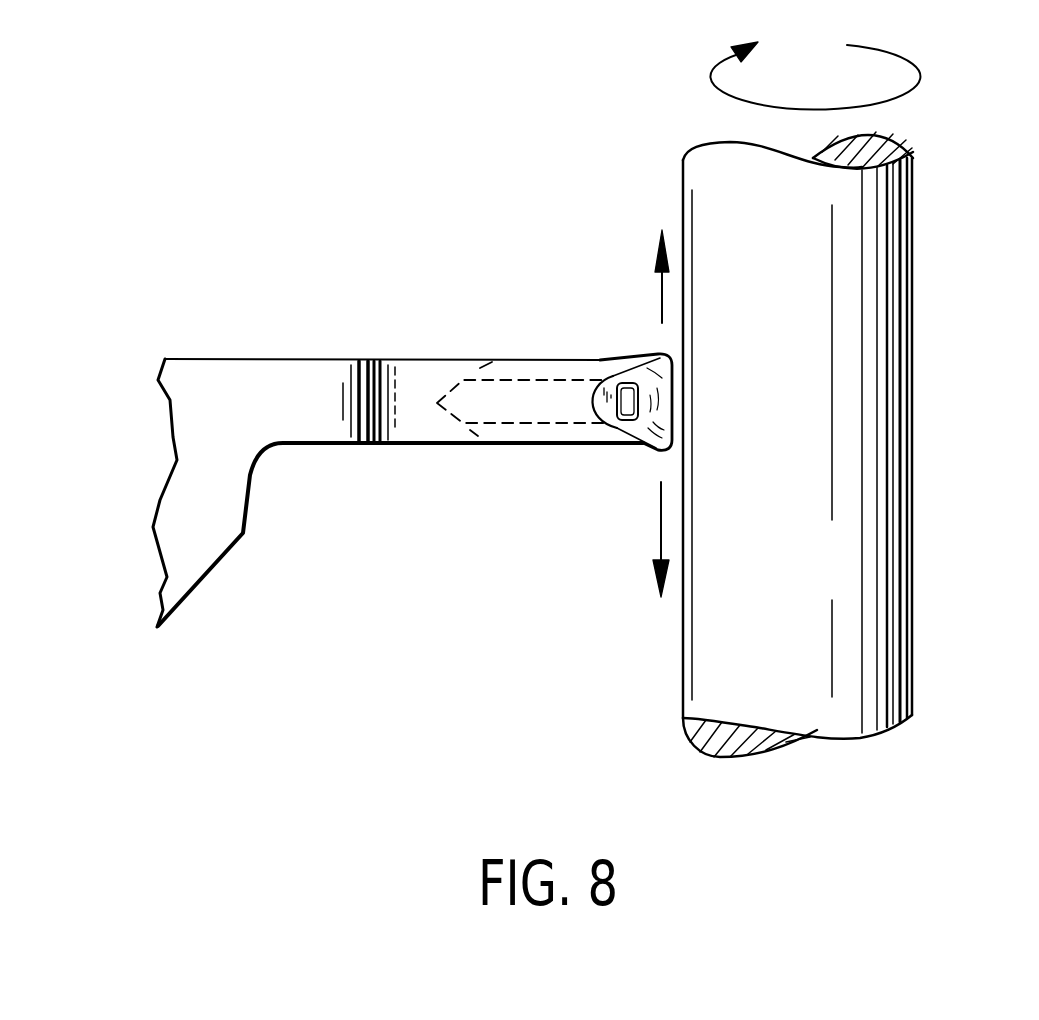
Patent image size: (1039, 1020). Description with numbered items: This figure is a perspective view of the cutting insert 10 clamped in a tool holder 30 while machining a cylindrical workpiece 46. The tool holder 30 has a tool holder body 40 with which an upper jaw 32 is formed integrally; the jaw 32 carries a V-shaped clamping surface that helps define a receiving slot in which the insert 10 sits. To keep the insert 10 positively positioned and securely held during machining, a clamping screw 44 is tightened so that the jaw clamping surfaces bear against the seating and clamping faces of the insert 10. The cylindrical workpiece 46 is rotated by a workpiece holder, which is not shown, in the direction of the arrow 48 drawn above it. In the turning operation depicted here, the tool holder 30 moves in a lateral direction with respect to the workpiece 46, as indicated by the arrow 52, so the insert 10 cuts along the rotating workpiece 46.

The insert 10 is at (630, 454).
The tool holder 30 is at (291, 183).
The upper jaw 32 is at (423, 390).
The tool holder body 40 is at (202, 423).
The clamping screw 44 is at (340, 380).
The cylindrical workpiece 46 is at (872, 257).
The arrow 48 is at (905, 90).
The arrow 52 is at (657, 303).